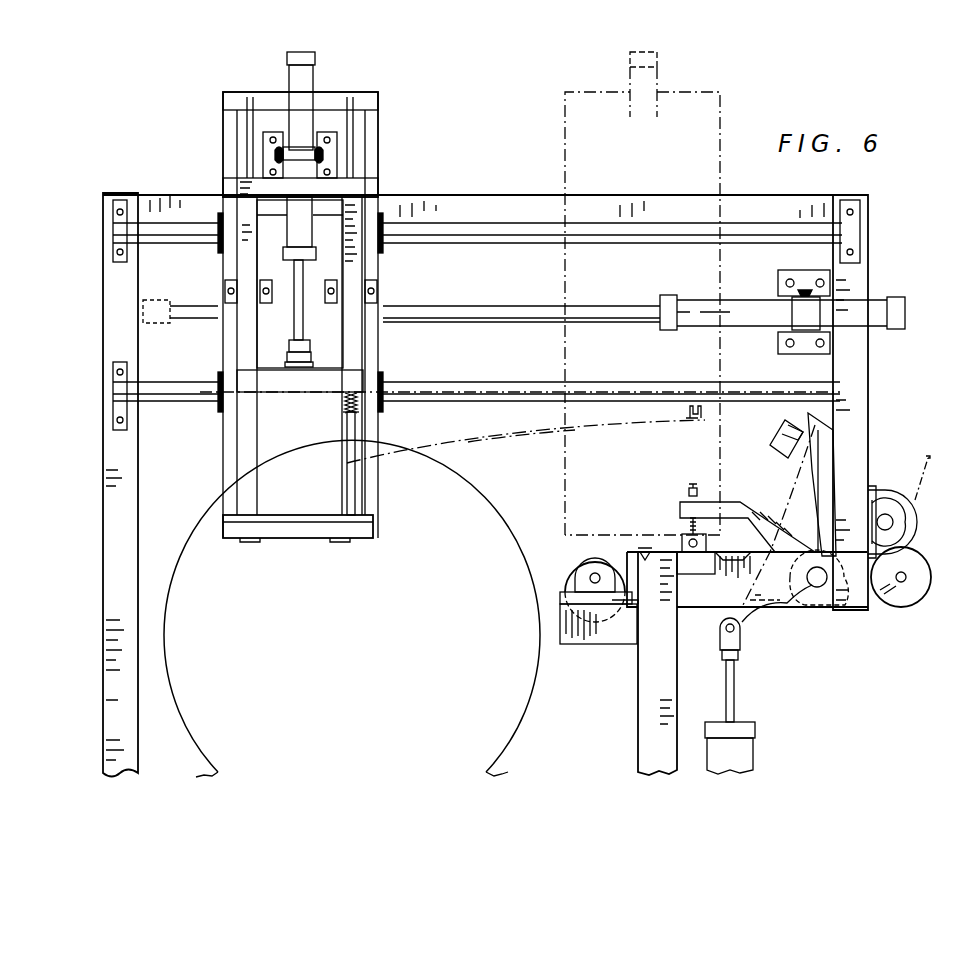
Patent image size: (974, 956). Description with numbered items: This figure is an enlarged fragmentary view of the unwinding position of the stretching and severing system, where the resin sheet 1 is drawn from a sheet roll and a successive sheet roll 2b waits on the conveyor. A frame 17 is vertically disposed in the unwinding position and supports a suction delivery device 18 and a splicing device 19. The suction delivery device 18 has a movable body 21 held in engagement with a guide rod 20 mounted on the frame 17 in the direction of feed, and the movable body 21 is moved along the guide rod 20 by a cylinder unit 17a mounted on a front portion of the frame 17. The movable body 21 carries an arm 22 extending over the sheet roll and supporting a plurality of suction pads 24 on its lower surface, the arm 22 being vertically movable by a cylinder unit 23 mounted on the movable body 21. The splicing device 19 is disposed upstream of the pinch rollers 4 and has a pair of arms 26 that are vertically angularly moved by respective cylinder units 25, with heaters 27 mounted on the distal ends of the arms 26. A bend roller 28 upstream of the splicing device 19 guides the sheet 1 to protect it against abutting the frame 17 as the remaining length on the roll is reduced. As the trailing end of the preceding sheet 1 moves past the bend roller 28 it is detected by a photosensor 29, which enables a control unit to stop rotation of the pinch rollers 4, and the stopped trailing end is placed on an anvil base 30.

The resin sheet 1 is at (500, 440).
The sheet roll 2b is at (196, 578).
The pinch rollers 4 is at (906, 518).
The frame 17 is at (108, 380).
The cylinder unit 17a is at (742, 306).
The suction delivery device 18 is at (382, 182).
The splicing device 19 is at (790, 592).
The guide rod 20 is at (466, 232).
The movable body 21 is at (222, 138).
The arm 22 is at (362, 388).
The cylinder unit 23 is at (306, 78).
The suction pads 24 is at (347, 416).
The cylinder units 25 is at (748, 758).
The arms 26 is at (774, 532).
The heaters 27 is at (688, 540).
The bend roller 28 is at (572, 570).
The photosensor 29 is at (650, 548).
The anvil base 30 is at (698, 570).